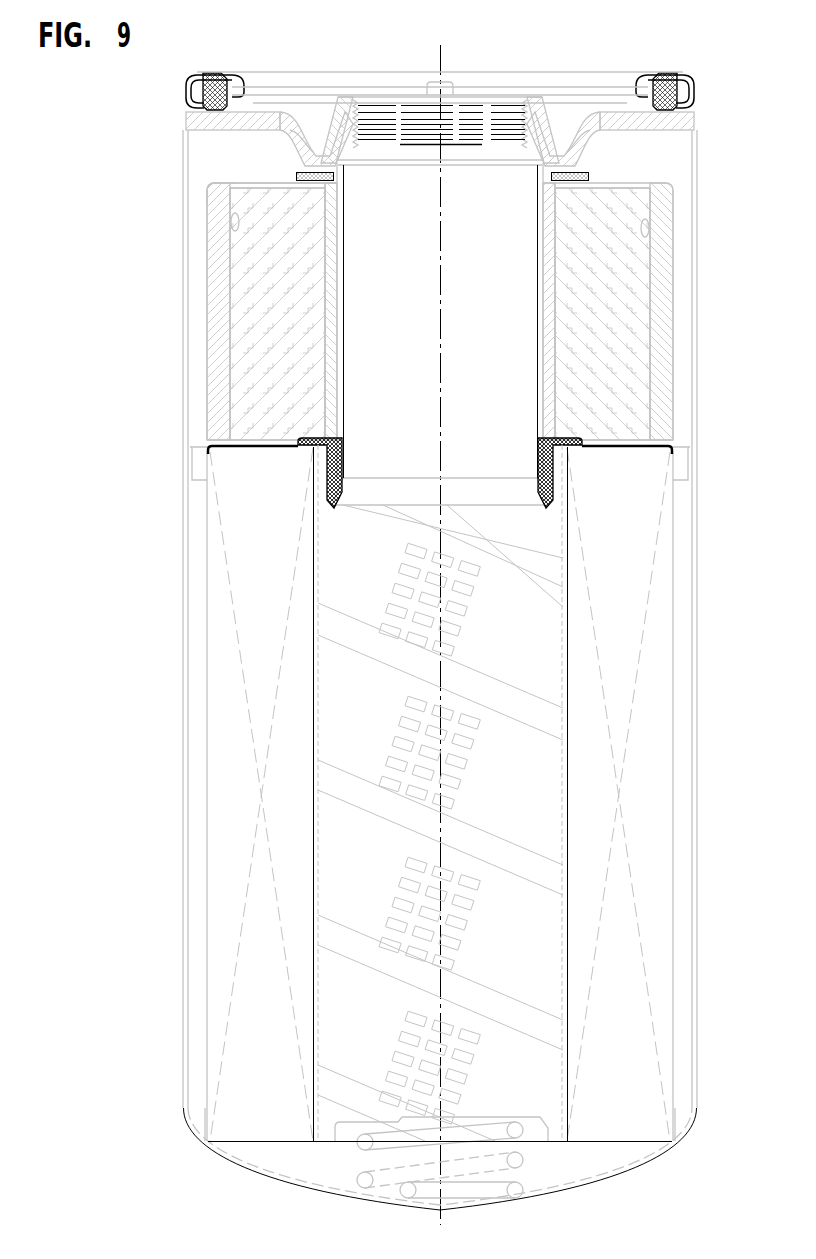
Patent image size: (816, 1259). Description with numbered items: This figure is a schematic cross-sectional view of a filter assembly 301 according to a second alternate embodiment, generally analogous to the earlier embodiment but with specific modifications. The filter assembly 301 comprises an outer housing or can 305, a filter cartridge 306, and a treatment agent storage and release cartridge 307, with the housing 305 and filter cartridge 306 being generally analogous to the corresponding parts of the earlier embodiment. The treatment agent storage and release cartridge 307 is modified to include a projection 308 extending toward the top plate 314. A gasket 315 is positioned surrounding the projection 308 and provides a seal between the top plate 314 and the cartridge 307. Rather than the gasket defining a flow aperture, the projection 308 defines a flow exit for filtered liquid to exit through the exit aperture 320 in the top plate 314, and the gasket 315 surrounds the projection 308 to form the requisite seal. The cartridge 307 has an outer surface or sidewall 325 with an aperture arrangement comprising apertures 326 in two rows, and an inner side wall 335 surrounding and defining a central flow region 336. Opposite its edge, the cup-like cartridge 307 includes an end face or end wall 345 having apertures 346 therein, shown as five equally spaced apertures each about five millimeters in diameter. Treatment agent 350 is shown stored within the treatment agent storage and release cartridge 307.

The filter assembly 301 is at (153, 570).
The outer housing or can 305 is at (186, 698).
The filter cartridge 306 is at (243, 820).
The treatment agent storage and release cartridge 307 is at (665, 352).
The projection 308 is at (360, 165).
The top plate 314 is at (255, 117).
The gasket 315 is at (588, 178).
The exit aperture 320 is at (390, 123).
The outer surface or sidewall 325 is at (215, 329).
The apertures 326 is at (235, 224).
The inner side wall 335 is at (347, 320).
The central flow region 336 is at (348, 420).
The end face or end wall 345 is at (242, 182).
The apertures 346 is at (270, 187).
The treatment agent 350 is at (610, 417).